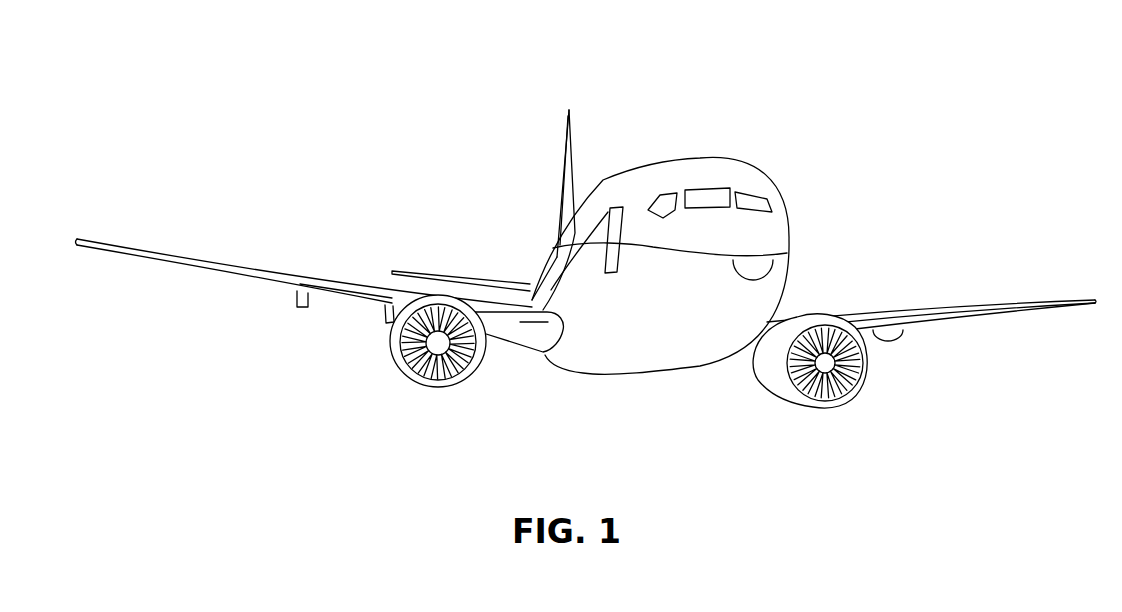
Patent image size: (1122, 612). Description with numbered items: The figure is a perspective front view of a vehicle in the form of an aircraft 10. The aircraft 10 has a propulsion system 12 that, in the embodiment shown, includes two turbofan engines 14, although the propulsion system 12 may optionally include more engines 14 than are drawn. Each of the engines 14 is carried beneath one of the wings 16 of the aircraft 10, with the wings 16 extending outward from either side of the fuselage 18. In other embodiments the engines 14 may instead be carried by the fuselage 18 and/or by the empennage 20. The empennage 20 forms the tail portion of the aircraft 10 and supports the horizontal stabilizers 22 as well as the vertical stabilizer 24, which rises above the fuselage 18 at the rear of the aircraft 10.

The aircraft 10 is at (337, 61).
The propulsion system 12 is at (908, 401).
The turbofan engines 14 is at (437, 388).
The wings 16 is at (213, 264).
The fuselage 18 is at (785, 223).
The empennage 20 is at (557, 257).
The horizontal stabilizers 22 is at (428, 272).
The vertical stabilizer 24 is at (565, 150).